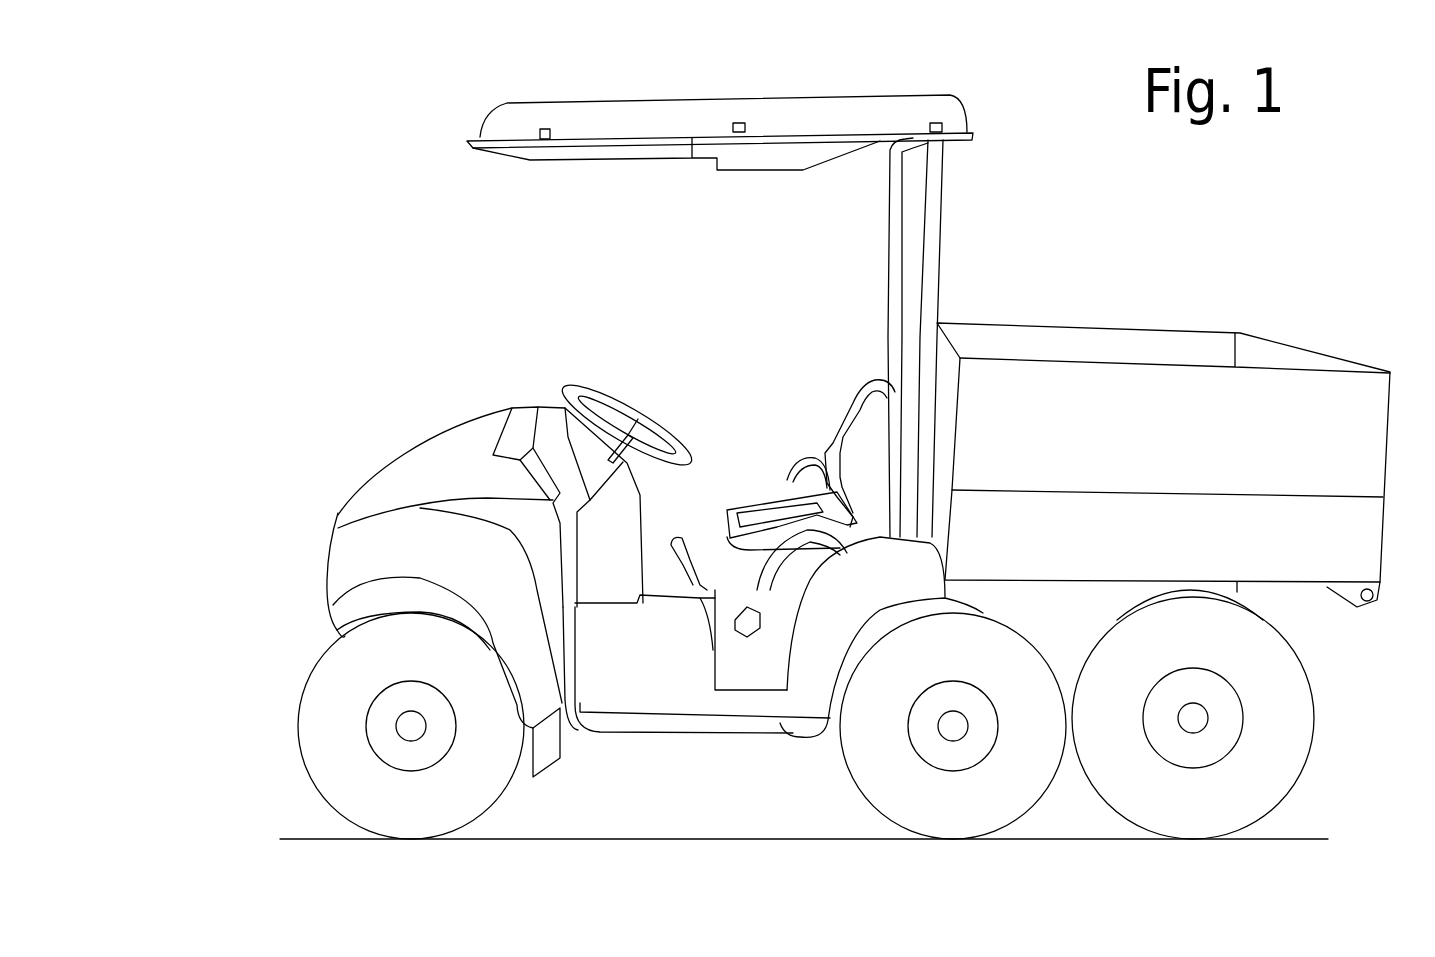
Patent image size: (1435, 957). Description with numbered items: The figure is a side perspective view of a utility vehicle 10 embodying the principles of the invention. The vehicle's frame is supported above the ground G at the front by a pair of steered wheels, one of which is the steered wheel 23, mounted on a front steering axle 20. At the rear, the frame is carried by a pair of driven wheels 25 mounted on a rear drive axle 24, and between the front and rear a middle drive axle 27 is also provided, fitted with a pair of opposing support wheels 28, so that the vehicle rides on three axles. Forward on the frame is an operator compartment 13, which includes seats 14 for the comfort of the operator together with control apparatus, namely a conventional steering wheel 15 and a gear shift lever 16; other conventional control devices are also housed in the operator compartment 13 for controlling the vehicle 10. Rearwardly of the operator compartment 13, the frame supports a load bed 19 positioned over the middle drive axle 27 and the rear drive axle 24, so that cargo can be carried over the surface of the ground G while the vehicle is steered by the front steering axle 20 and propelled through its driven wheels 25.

The utility vehicle 10 is at (398, 119).
The operator compartment 13 is at (661, 359).
The seats 14 is at (870, 383).
The steering wheel 15 is at (580, 380).
The gear shift lever 16 is at (675, 540).
The load bed 19 is at (1281, 342).
The front steering axle 20 is at (397, 730).
The steered wheel 23 is at (306, 695).
The rear drive axle 24 is at (1208, 718).
The driven wheels 25 is at (1298, 790).
The middle drive axle 27 is at (957, 742).
The support wheels 28 is at (870, 806).
The ground G is at (1288, 840).